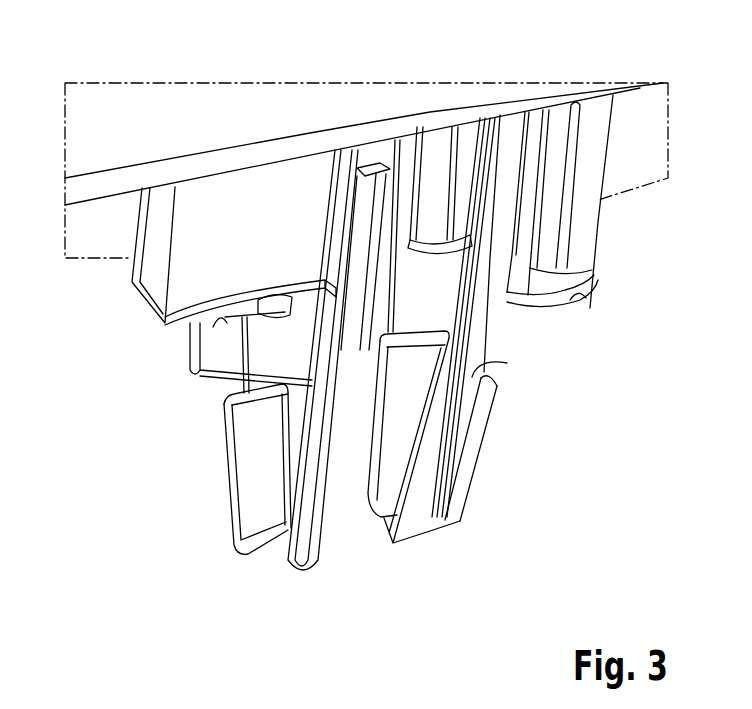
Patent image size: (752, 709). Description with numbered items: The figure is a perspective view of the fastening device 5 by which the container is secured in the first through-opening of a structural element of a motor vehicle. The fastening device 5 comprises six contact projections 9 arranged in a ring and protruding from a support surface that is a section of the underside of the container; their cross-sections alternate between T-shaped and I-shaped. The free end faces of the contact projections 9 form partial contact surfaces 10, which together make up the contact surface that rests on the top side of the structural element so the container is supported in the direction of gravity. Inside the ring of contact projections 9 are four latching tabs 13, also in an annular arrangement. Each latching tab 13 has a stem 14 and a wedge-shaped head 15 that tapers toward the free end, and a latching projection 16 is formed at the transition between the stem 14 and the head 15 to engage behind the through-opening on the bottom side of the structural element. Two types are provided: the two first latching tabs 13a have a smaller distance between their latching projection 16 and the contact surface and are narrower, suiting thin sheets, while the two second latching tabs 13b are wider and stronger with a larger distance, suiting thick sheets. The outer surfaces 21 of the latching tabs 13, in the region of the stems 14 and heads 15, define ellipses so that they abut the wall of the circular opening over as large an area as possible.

The fastening device 5 is at (137, 568).
The contact projections 9 is at (160, 197).
The partial contact surfaces 10 is at (220, 322).
The latching tabs 13 is at (335, 423).
The first latching tabs 13a is at (377, 518).
The second latching tabs 13b is at (260, 538).
The stem 14 is at (320, 333).
The head 15 is at (314, 465).
The latching projection 16 is at (228, 393).
The outer surfaces 21 is at (258, 494).